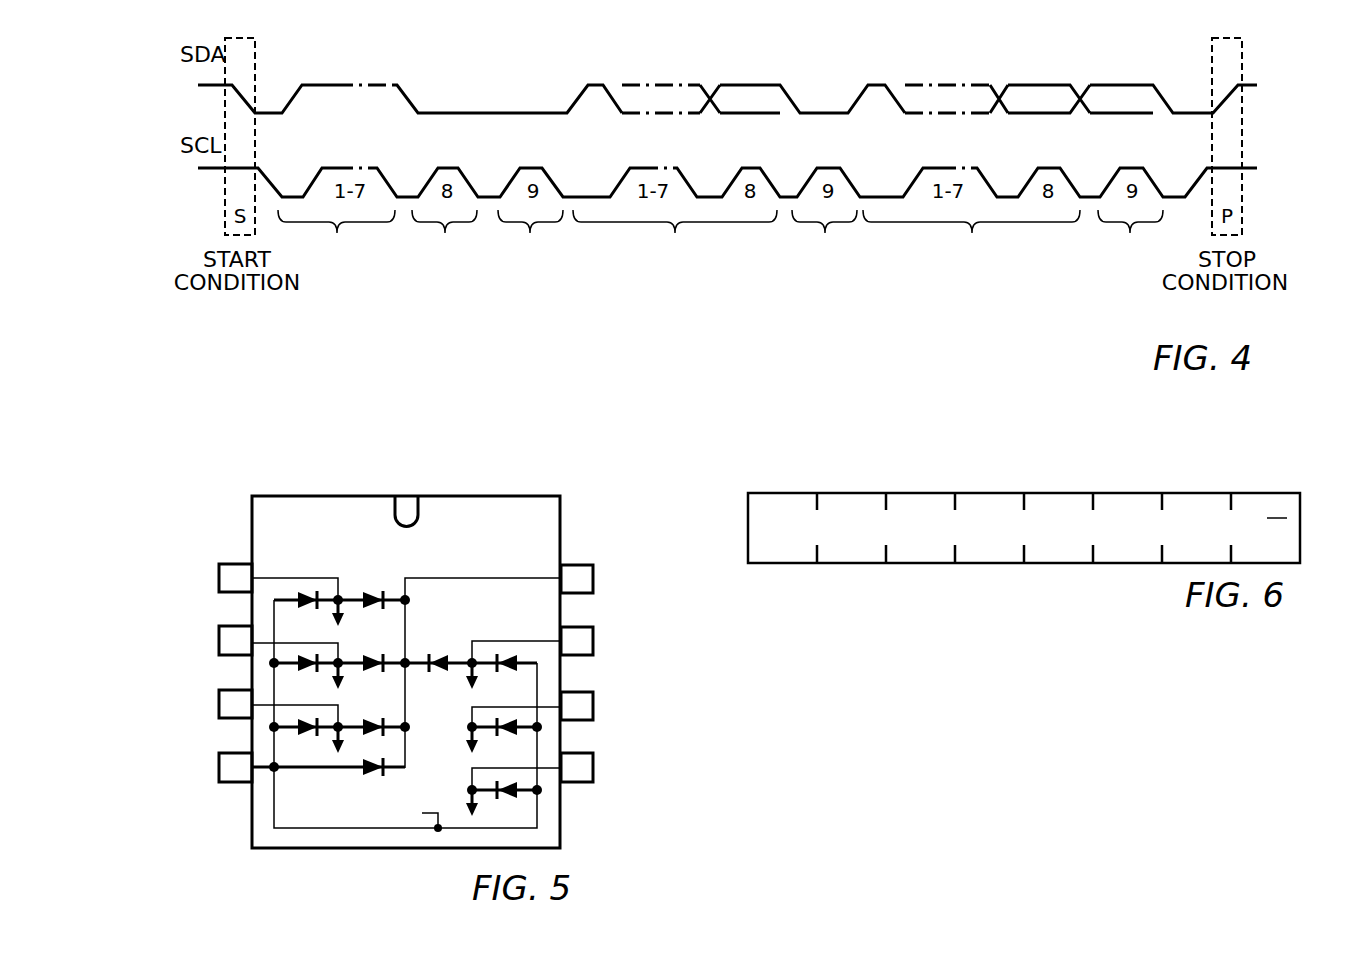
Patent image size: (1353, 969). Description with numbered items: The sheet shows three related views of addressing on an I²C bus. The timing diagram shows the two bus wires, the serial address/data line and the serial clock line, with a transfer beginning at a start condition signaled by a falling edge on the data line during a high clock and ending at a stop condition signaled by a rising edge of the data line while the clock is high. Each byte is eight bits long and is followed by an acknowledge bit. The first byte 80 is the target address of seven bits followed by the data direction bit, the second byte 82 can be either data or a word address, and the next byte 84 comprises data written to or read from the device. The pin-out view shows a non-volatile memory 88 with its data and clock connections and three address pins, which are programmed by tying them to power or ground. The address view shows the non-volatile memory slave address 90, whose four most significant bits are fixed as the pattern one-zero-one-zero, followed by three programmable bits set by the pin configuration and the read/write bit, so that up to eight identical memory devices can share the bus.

In FIG. 4, the first byte 80 is at (413, 285).
In FIG. 4, the second byte 82 is at (718, 284).
In FIG. 4, the next byte 84 is at (1028, 285).
In FIG. 5, the non-volatile memory 88 is at (583, 467).
In FIG. 6, the non-volatile memory slave address 90 is at (1275, 456).